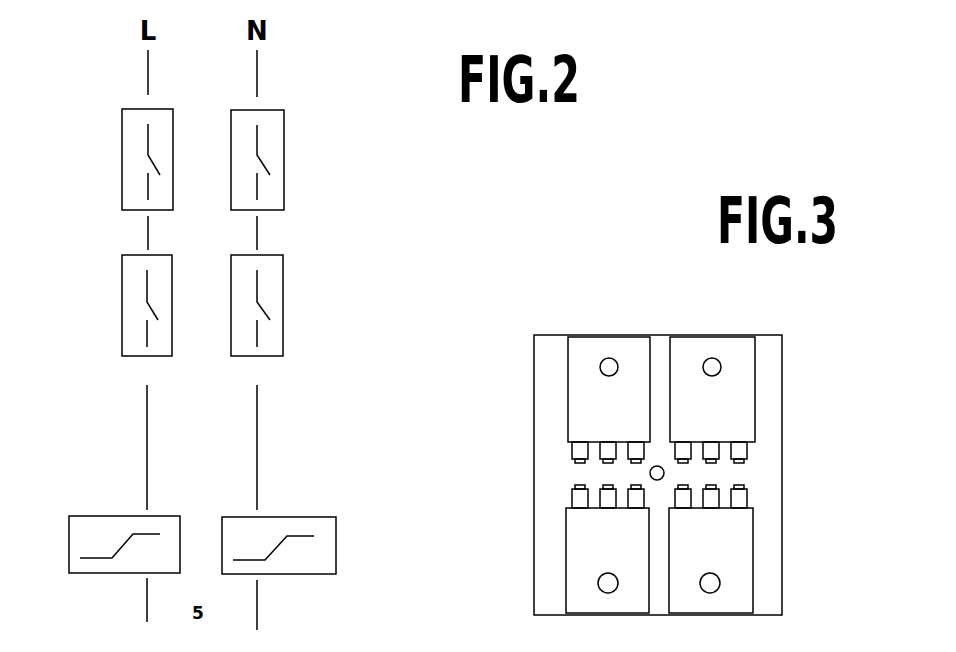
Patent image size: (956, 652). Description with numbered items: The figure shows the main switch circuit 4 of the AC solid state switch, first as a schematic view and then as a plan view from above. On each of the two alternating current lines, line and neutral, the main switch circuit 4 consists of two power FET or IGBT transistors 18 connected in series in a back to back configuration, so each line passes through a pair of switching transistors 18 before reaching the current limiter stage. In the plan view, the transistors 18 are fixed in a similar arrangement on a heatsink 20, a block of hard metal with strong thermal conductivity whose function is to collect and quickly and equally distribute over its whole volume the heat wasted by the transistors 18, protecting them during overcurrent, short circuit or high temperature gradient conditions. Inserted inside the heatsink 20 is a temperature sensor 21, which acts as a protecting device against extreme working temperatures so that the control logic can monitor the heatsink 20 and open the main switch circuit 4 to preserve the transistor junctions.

In FIG. 2, the main switch circuit 4 is at (320, 258).
In FIG. 3, the main switch circuit 4 is at (618, 325).
In FIG. 2, the power FET transistor 18 is at (107, 146).
In FIG. 3, the power FET transistor 18 is at (583, 410).
In FIG. 3, the heatsink 20 is at (555, 472).
In FIG. 3, the temperature sensor 21 is at (663, 477).